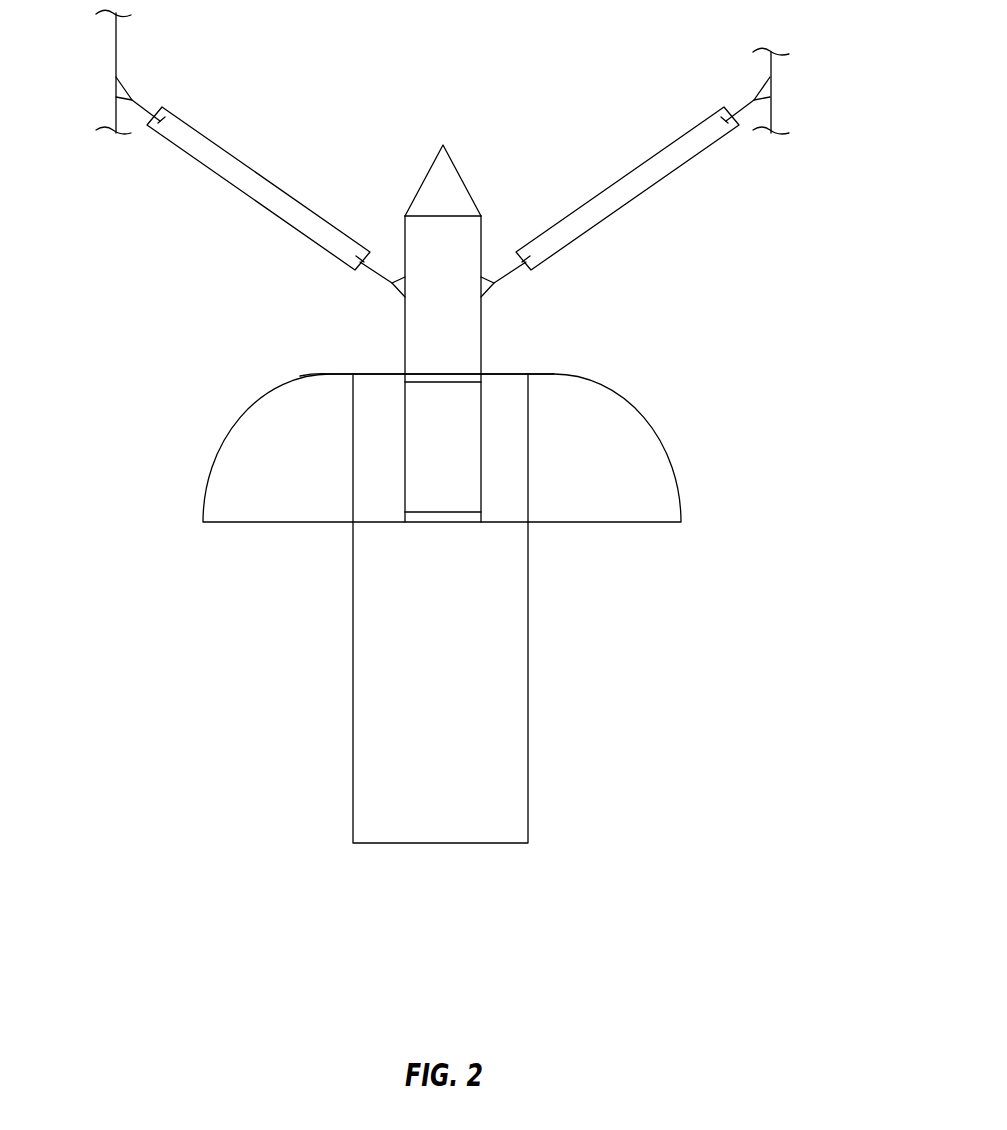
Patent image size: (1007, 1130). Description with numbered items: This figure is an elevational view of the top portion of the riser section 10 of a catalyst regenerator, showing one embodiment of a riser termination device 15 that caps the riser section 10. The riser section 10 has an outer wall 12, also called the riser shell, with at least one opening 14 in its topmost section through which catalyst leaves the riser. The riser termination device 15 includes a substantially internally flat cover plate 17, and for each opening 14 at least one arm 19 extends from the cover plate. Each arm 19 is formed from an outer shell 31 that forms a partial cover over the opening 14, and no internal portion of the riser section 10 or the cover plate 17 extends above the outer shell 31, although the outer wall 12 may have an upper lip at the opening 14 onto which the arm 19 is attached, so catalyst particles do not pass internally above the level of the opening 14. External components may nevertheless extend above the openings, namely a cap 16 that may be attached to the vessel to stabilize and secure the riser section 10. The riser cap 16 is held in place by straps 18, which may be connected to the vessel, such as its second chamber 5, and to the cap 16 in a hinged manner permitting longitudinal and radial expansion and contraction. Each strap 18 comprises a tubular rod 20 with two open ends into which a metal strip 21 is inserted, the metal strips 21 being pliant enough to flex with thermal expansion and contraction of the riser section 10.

The second chamber 5 is at (116, 50).
The riser section 10 is at (510, 827).
The outer wall 12 is at (528, 607).
The opening 14 is at (422, 487).
The riser termination device 15 is at (566, 367).
The cap 16 is at (472, 193).
The cover plate 17 is at (367, 374).
The strap 18 is at (200, 174).
The arm 19 is at (323, 374).
The tubular rod 20 is at (272, 183).
The metal strip 21 is at (133, 100).
The outer shell 31 is at (628, 468).